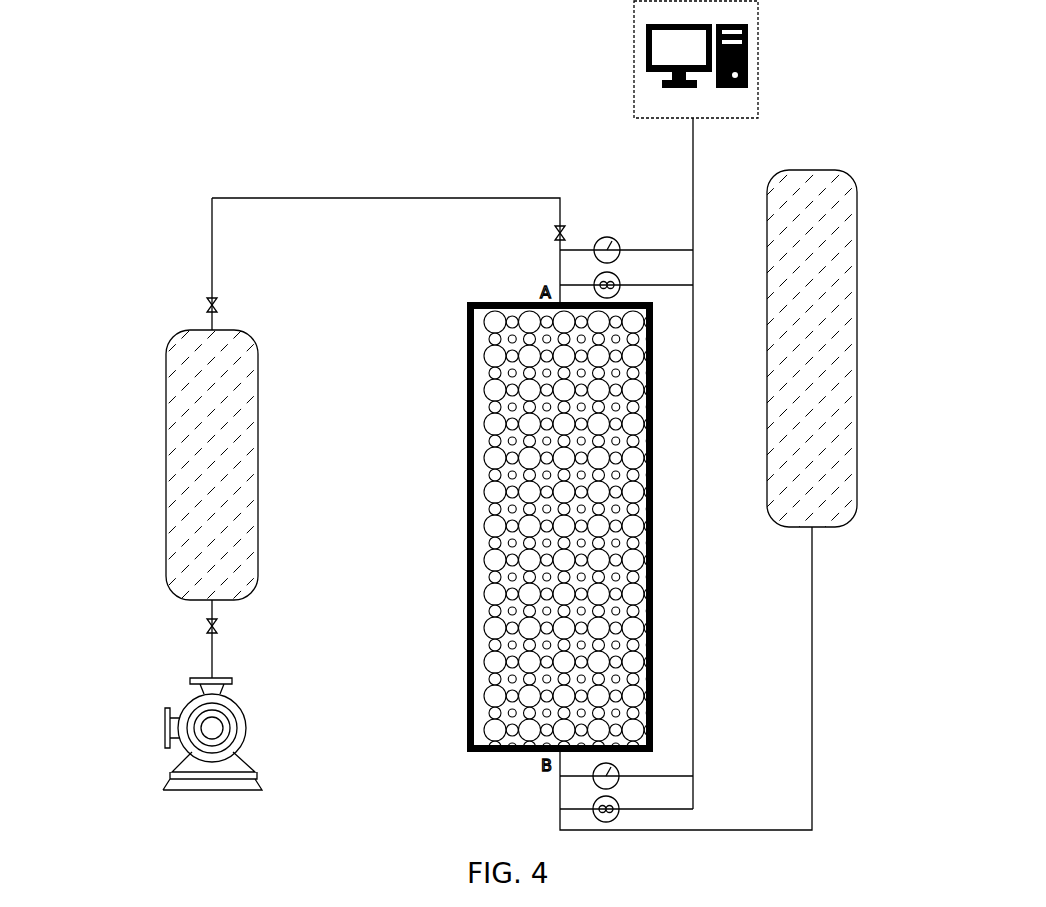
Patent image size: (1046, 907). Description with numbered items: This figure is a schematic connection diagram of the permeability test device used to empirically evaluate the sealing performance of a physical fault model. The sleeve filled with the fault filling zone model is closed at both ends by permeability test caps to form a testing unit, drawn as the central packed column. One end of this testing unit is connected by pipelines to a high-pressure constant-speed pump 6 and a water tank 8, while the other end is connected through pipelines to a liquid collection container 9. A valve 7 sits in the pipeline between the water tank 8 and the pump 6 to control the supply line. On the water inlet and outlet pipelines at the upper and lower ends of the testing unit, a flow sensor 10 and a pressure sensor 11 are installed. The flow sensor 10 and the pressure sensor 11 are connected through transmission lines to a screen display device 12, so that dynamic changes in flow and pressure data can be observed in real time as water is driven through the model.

The high-pressure constant-speed pump 6 is at (165, 728).
The valve 7 is at (205, 627).
The water tank 8 is at (170, 458).
The liquid collection container 9 is at (840, 308).
The flow sensor 10 is at (615, 276).
The pressure sensor 11 is at (608, 244).
The screen display device 12 is at (758, 57).